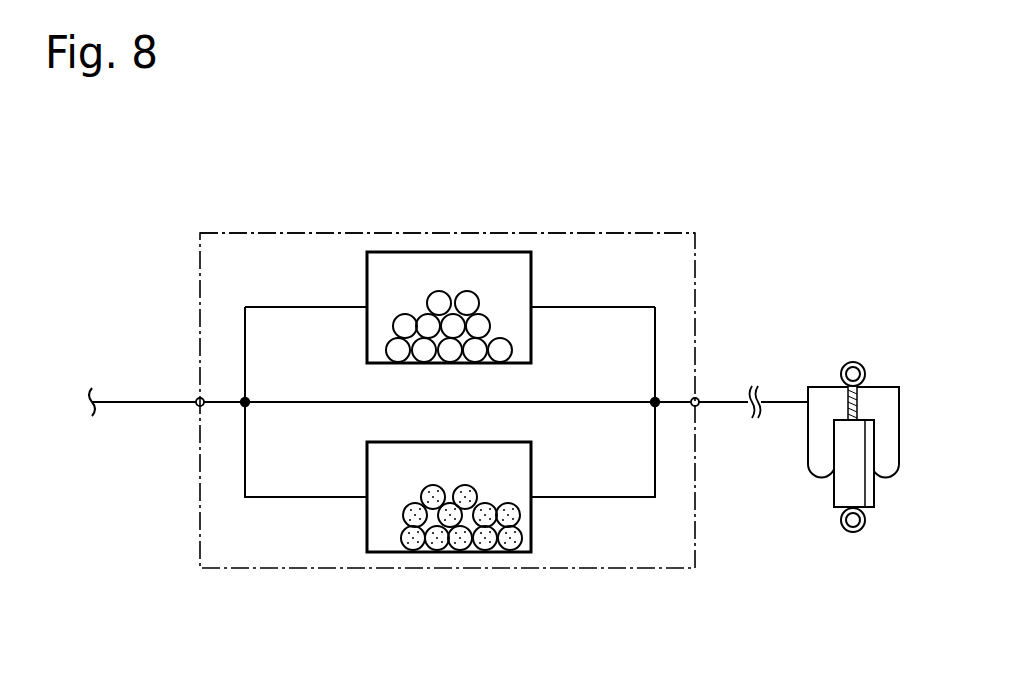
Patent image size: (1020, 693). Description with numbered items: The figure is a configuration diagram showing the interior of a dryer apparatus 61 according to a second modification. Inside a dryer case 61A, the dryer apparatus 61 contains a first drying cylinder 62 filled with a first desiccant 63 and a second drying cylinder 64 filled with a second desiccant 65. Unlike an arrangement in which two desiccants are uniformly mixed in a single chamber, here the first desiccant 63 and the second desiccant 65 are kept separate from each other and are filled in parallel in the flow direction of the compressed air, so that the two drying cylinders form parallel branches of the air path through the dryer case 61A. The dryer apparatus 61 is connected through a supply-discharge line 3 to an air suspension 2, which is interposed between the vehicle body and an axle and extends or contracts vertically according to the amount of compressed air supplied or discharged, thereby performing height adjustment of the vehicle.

The air suspension 2 is at (828, 407).
The supply-discharge line 3 is at (150, 400).
The dryer apparatus 61 is at (437, 233).
The dryer case 61A is at (529, 233).
The first drying cylinder 62 is at (382, 251).
The first desiccant 63 is at (404, 325).
The second drying cylinder 64 is at (485, 552).
The second desiccant 65 is at (437, 552).